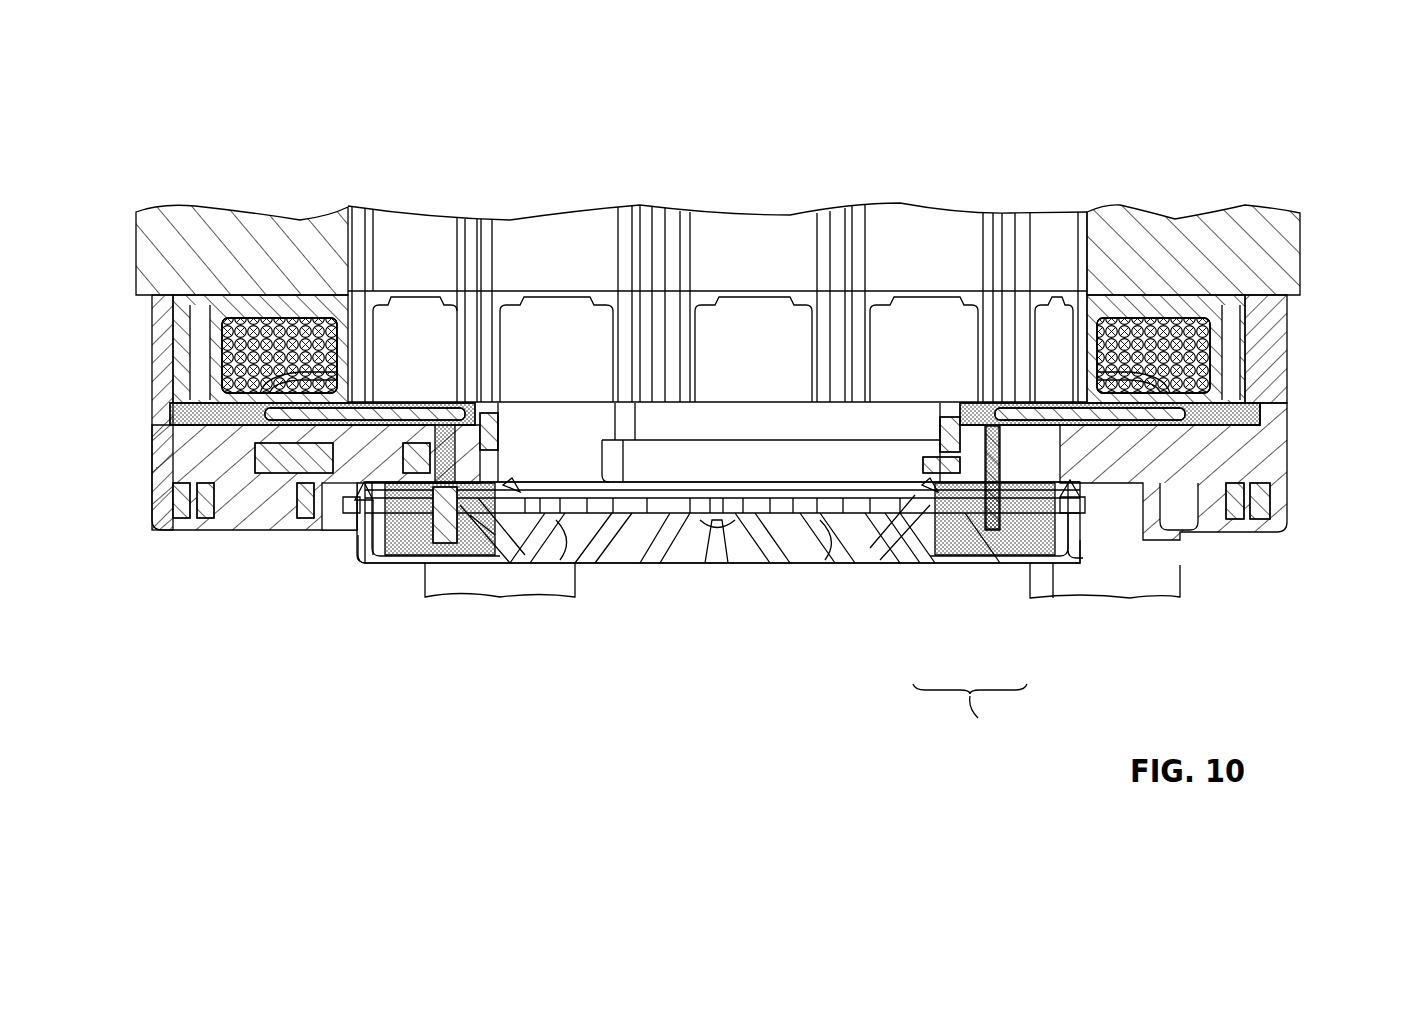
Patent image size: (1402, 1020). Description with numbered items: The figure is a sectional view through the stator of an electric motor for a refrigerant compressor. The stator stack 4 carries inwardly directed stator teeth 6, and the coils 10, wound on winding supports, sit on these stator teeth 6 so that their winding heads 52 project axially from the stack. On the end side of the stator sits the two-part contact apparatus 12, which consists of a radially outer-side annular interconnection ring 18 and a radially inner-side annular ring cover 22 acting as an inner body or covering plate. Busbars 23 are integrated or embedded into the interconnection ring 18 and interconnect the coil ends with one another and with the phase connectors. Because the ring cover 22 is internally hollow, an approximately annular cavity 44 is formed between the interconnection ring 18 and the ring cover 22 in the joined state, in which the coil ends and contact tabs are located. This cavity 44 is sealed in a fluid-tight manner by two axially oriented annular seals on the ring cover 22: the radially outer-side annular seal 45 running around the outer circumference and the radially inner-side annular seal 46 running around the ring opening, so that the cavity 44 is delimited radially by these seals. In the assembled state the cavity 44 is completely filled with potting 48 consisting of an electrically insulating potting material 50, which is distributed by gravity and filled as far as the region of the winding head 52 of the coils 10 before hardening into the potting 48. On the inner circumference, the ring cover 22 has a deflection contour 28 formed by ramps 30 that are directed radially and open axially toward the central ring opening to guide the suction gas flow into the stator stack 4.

The stator stack 4 is at (216, 228).
The stator teeth 6 is at (756, 228).
The coils 10 is at (716, 355).
The contact apparatus 12 is at (970, 717).
The interconnection ring 18 is at (1052, 580).
The ring cover 22 is at (900, 555).
The busbars 23 is at (304, 518).
The deflection contour 28 is at (722, 522).
The ramps 30 is at (715, 548).
The cavity 44 is at (420, 547).
The radially outer-side annular seal 45 is at (357, 533).
The radially inner-side annular seal 46 is at (505, 488).
The potting 48 is at (452, 402).
The potting material 50 is at (715, 414).
The winding head 52 is at (228, 360).